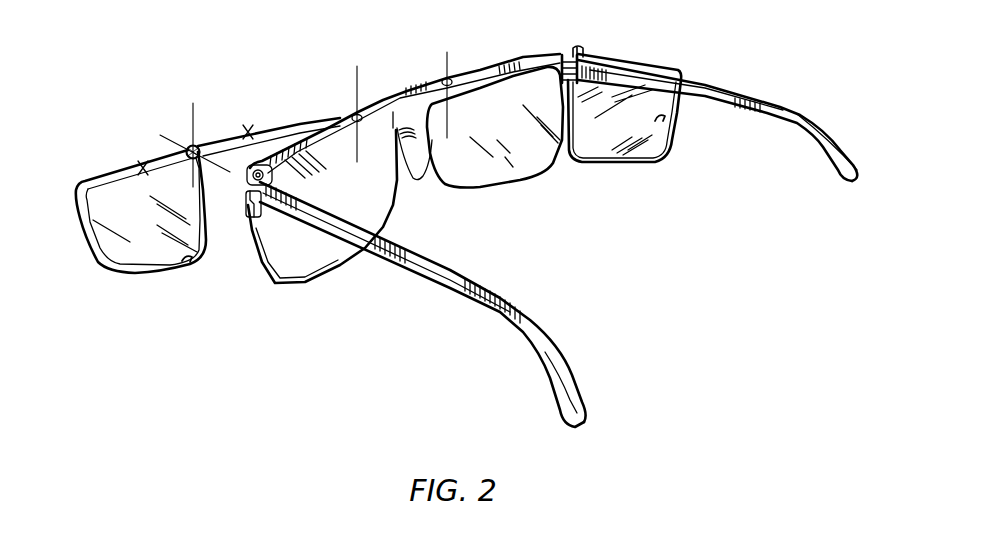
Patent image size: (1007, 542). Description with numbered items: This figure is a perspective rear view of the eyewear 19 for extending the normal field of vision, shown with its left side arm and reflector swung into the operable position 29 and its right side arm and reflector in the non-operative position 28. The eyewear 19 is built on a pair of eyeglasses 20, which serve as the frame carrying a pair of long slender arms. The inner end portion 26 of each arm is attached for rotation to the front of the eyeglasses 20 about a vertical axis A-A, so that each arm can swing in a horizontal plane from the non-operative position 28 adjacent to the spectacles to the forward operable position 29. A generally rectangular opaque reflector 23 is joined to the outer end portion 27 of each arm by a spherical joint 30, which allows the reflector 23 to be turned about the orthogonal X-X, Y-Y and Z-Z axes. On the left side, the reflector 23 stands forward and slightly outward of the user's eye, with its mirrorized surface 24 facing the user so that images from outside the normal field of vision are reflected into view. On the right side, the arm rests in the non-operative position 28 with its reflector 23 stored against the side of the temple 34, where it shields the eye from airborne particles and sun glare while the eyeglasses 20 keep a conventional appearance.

The eyewear 19 is at (272, 365).
The eyeglasses 20 is at (500, 182).
The reflector 23 is at (155, 273).
The mirrorized surface 24 is at (188, 260).
The inner end portion 26 is at (353, 110).
The outer end portion 27 is at (203, 143).
The non-operative position 28 is at (625, 163).
The operable position 29 is at (103, 270).
The spherical joint 30 is at (190, 146).
The temple 34 is at (750, 97).